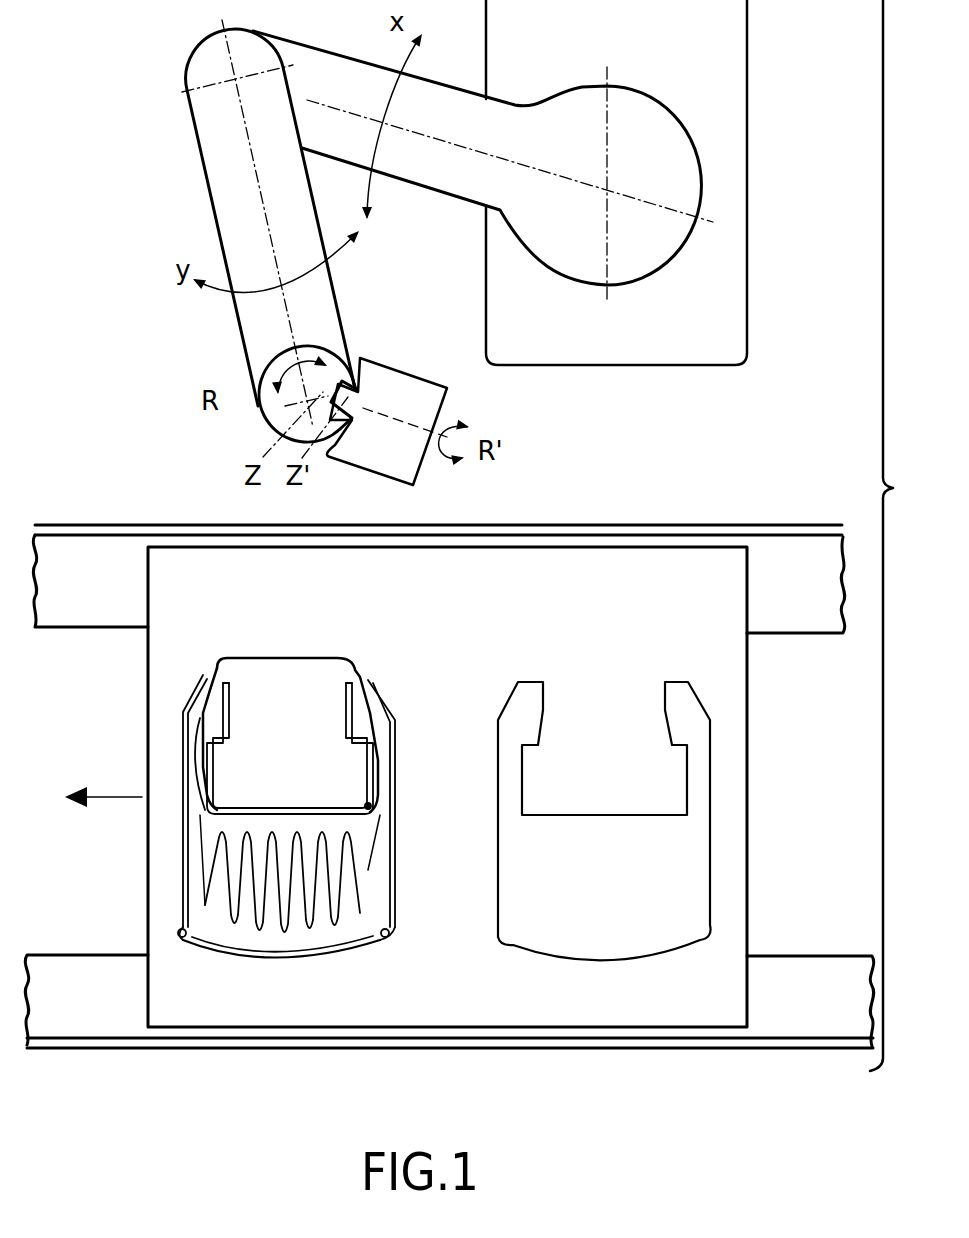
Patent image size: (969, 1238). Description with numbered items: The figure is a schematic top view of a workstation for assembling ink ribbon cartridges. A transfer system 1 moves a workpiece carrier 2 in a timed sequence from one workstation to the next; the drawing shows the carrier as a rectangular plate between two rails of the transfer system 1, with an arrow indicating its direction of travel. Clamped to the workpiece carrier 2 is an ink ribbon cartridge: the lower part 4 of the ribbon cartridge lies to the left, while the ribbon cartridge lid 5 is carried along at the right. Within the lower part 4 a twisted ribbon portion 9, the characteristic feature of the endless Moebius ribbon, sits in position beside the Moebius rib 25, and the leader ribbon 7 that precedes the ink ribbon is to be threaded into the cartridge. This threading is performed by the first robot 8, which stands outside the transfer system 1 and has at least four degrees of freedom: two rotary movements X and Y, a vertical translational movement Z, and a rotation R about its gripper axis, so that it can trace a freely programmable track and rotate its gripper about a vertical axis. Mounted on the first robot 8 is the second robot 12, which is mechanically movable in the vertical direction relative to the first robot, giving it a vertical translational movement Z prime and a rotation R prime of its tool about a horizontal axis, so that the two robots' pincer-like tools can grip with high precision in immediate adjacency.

The transfer system 1 is at (105, 1020).
The workpiece carrier 2 is at (218, 998).
The lower part of the ribbon cartridge 4 is at (367, 940).
The ribbon cartridge lid 5 is at (543, 927).
The leader ribbon 7 is at (313, 658).
The first robot 8 is at (737, 87).
The twisted ribbon portion 9 is at (197, 743).
The second robot 12 is at (430, 402).
The Moebius rib 25 is at (208, 812).